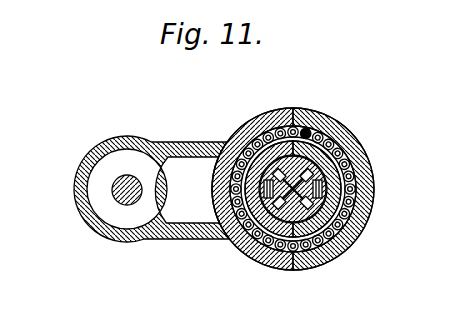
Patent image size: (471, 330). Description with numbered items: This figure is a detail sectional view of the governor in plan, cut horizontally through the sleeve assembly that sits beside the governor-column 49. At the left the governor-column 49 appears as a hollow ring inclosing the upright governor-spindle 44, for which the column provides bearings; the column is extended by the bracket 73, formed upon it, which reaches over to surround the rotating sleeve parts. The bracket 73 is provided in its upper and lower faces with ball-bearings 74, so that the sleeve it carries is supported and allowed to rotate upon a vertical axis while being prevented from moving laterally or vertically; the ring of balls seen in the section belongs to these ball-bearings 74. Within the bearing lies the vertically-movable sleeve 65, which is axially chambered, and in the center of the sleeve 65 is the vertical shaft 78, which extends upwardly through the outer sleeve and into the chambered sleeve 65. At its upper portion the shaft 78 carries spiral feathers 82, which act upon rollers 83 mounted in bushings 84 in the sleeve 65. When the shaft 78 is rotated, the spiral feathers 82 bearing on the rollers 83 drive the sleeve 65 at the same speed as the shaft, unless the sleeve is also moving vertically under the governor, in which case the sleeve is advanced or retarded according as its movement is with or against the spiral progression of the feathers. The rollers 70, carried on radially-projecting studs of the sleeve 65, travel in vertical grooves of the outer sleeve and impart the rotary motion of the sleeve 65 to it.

The governor-column 49 is at (77, 205).
The governor-spindle 44 is at (131, 195).
The bushings 84 is at (225, 140).
The rollers 70 is at (404, 197).
The vertical shaft 78 is at (327, 124).
The rollers 83 is at (268, 137).
The spiral feathers 82 is at (296, 170).
The ball-bearings 74 is at (242, 230).
The vertically-movable sleeve 65 is at (356, 229).
The bracket 73 is at (305, 271).